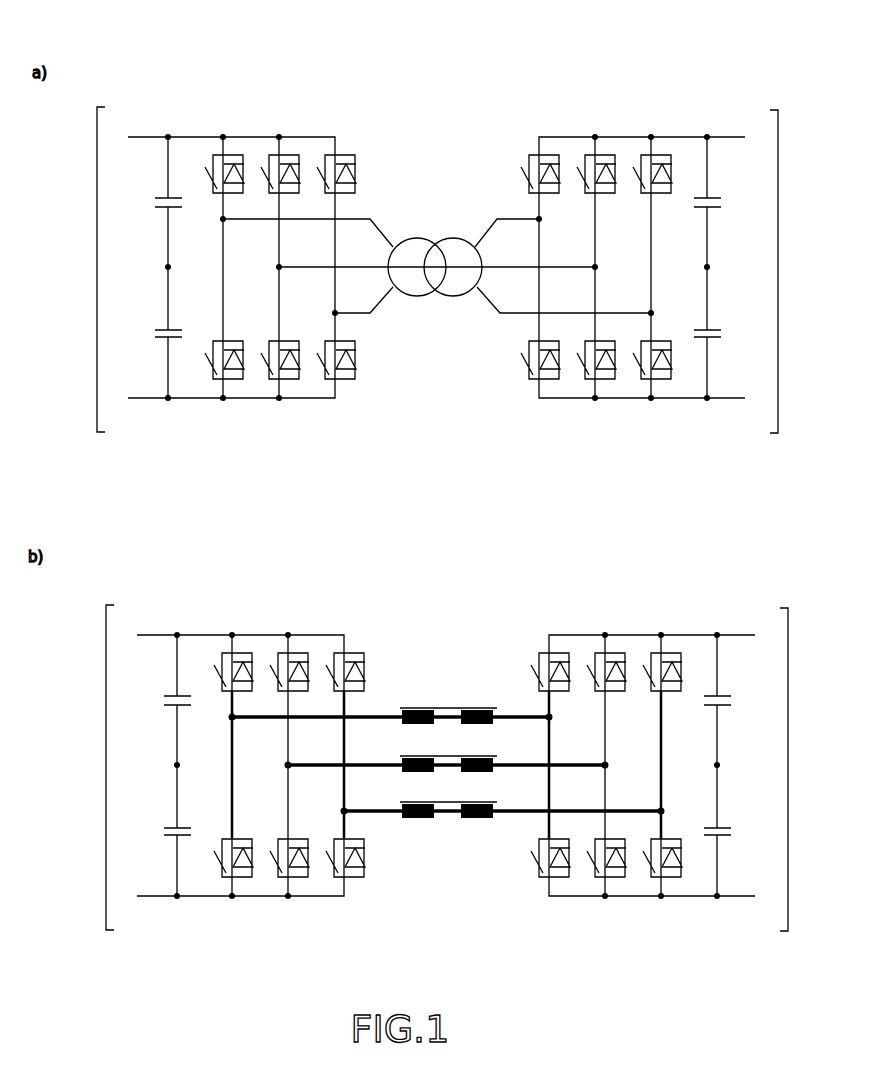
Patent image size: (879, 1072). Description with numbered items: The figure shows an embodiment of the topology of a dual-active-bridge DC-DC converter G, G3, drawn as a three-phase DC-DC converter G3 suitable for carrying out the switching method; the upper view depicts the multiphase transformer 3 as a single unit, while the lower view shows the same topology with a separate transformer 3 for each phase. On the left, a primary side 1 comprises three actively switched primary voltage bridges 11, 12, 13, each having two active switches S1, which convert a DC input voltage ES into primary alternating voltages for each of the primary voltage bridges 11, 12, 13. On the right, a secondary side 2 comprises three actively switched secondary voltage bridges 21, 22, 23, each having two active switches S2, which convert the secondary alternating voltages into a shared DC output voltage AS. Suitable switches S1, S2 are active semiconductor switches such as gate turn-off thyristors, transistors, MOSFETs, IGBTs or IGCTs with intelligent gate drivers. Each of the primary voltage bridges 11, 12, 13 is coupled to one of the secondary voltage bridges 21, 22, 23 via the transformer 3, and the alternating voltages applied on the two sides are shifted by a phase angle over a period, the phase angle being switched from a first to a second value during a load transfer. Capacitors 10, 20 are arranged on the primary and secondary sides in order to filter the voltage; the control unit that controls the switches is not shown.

The primary side 1 is at (194, 92).
The secondary side 2 is at (680, 105).
The transformer 3 is at (433, 216).
The capacitor 10 is at (159, 268).
The primary voltage bridge 11 is at (217, 221).
The primary voltage bridge 12 is at (274, 268).
The primary voltage bridge 13 is at (329, 312).
The capacitor 20 is at (723, 268).
The secondary voltage bridge 21 is at (548, 222).
The secondary voltage bridge 22 is at (605, 268).
The secondary voltage bridge 23 is at (660, 311).
The active switch S1 is at (210, 143).
The active switch S2 is at (637, 145).
The DC input voltage ES is at (96, 271).
The DC output voltage AS is at (780, 272).
The DC/DC converter device G is at (441, 490).
The three-phase DC-DC converter G3 is at (421, 88).